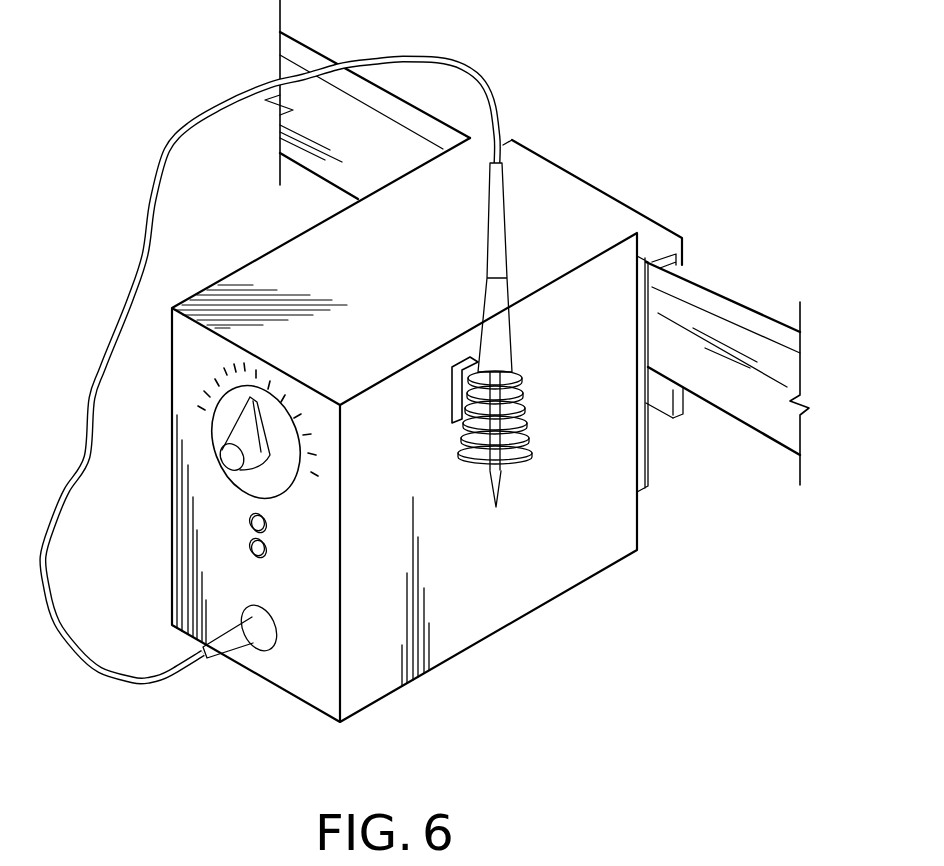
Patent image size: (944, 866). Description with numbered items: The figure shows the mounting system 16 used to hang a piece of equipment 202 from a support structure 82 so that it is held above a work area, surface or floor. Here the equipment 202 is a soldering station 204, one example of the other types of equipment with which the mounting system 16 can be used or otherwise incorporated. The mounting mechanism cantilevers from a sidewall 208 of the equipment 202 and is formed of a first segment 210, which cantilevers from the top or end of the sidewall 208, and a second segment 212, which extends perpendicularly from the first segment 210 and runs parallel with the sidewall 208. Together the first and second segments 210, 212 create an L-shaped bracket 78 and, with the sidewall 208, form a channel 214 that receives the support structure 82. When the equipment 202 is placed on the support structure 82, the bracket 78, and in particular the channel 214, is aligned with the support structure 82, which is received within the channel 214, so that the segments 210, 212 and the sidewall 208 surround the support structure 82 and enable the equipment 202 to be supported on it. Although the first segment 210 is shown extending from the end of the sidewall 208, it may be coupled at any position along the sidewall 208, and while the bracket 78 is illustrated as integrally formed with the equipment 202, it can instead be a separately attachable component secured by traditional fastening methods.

The mounting system 16 is at (426, 361).
The L-shaped bracket 78 is at (663, 430).
The support structure 82 is at (748, 338).
The equipment 202 is at (385, 298).
The soldering station 204 is at (532, 436).
The sidewall 208 is at (648, 470).
The first segment 210 is at (553, 177).
The second segment 212 is at (687, 258).
The channel 214 is at (680, 413).